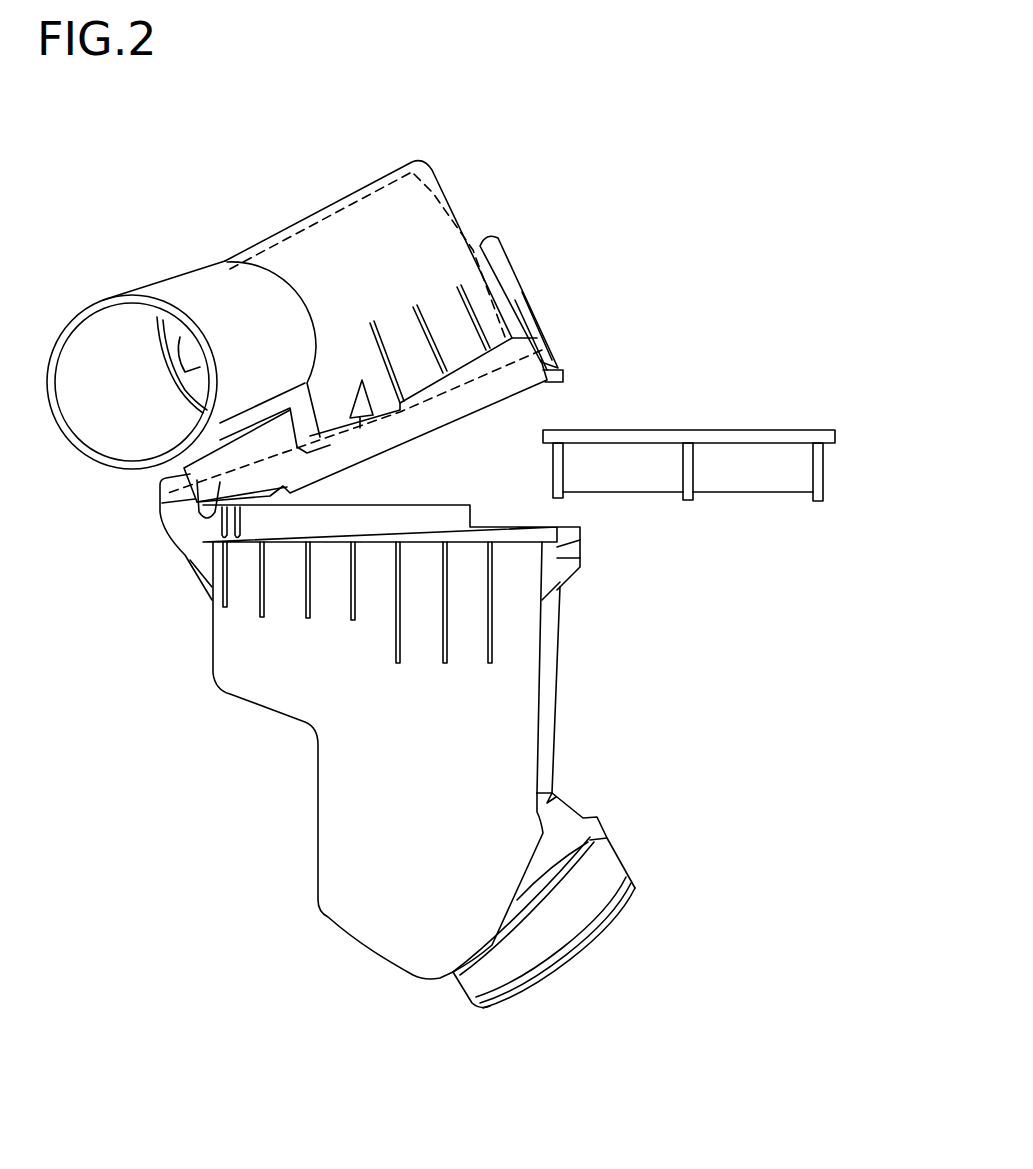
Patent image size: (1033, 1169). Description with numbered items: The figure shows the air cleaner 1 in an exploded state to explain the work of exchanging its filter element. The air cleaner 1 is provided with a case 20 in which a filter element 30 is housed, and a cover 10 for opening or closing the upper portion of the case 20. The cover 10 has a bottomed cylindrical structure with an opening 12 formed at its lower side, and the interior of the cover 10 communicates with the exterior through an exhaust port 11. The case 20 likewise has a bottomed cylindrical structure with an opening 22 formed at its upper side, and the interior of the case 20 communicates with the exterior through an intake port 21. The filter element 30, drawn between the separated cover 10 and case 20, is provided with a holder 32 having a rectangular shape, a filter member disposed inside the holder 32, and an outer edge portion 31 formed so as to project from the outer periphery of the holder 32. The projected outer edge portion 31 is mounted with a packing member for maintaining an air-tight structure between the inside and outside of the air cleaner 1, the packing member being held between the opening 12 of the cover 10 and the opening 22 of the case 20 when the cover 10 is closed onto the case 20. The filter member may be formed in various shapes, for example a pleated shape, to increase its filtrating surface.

The air cleaner 1 is at (739, 166).
The cover 10 is at (430, 211).
The exhaust port 11 is at (98, 433).
The opening 12 is at (543, 387).
The case 20 is at (326, 860).
The intake port 21 is at (560, 932).
The opening 22 is at (543, 527).
The filter element 30 is at (800, 482).
The outer edge portion 31 is at (830, 450).
The holder 32 is at (758, 475).